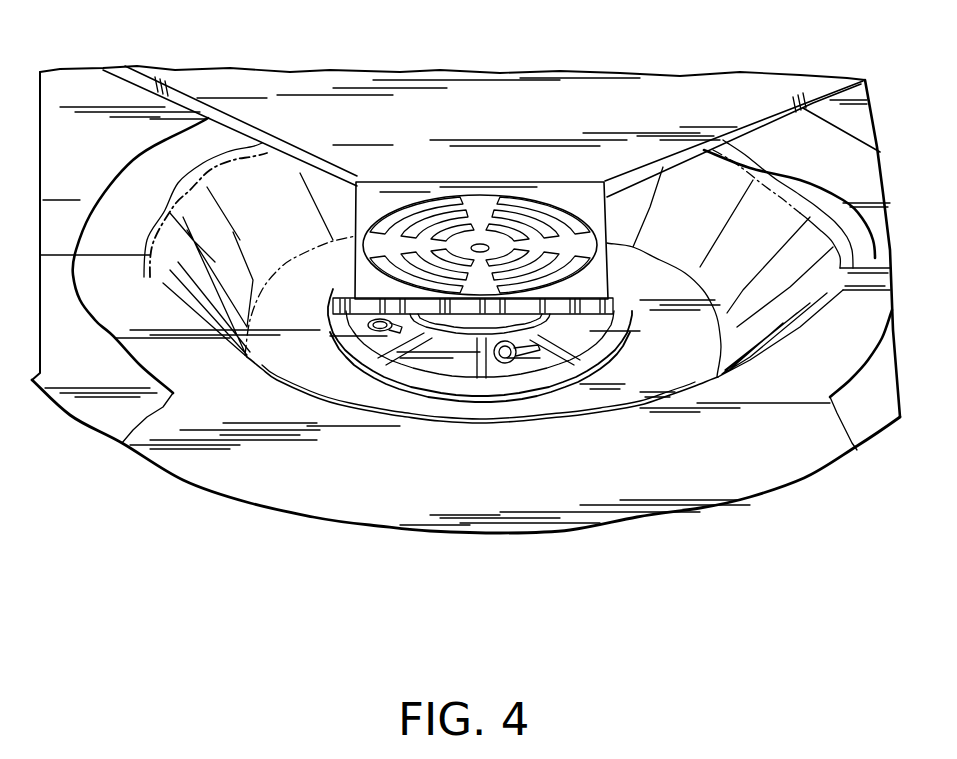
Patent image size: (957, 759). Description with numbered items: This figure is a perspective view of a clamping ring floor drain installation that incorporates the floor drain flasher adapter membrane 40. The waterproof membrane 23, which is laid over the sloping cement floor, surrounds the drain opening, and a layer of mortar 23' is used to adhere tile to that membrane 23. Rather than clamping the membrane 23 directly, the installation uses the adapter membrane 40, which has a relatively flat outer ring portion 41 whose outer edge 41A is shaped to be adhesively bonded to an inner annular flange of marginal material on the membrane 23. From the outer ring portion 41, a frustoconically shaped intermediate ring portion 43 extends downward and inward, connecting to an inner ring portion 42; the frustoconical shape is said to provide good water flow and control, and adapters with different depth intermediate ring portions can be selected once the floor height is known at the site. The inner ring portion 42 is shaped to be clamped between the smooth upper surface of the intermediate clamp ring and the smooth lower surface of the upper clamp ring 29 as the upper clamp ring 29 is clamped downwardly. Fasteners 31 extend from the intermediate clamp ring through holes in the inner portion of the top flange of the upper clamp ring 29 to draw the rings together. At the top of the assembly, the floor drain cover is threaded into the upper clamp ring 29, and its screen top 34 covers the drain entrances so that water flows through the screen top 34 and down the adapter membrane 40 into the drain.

The waterproof membrane 23 is at (466, 272).
The layer of mortar 23' is at (230, 103).
The upper clamp ring 29 is at (355, 352).
The fasteners 31 is at (503, 364).
The screen top 34 is at (550, 183).
The floor drain flasher adapter membrane 40 is at (315, 518).
The outer ring portion 41 is at (447, 505).
The outer edge 41A is at (373, 526).
The inner ring portion 42 is at (667, 375).
The intermediate ring portion 43 is at (277, 212).